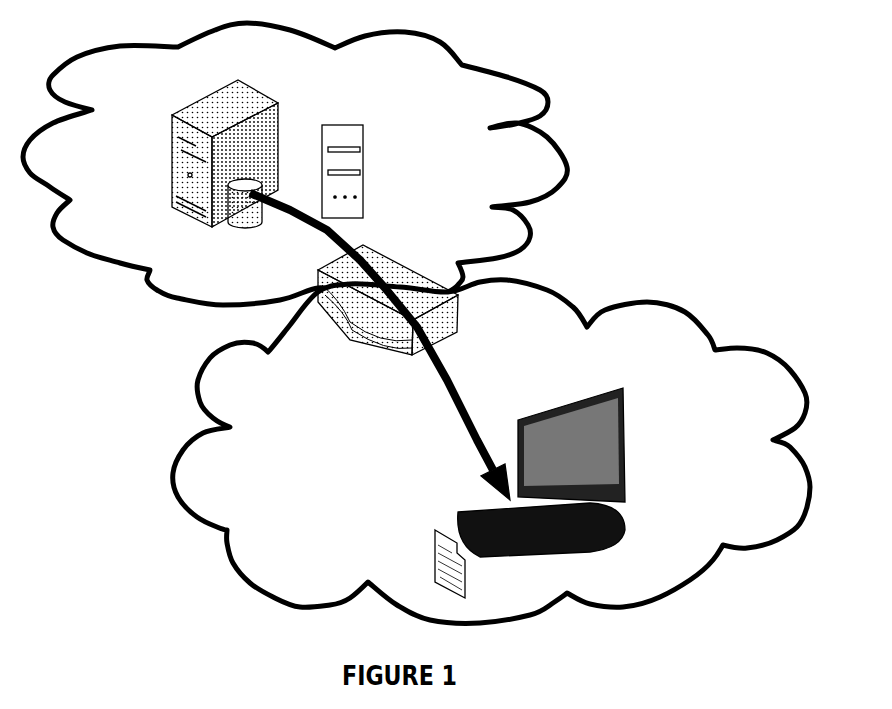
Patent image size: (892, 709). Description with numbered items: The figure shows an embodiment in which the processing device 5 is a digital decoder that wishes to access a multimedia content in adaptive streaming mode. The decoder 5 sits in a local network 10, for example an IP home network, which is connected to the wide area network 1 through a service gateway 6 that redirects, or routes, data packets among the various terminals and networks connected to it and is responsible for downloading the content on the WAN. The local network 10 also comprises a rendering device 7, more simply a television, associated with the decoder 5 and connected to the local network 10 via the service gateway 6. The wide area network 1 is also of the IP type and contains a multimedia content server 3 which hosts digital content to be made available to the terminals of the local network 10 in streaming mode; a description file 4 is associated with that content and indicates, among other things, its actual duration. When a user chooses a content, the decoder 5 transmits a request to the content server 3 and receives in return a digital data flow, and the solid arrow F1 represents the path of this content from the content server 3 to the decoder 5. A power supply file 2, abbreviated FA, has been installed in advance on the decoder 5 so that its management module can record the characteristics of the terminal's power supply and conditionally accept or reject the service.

The wide area network 1 is at (477, 58).
The local network 10 is at (788, 357).
The content server 3 is at (287, 110).
The description file 4 is at (305, 137).
The service gateway 6 is at (447, 290).
The solid arrow F1 is at (470, 407).
The rendering device 7 is at (628, 452).
The processing device 5 is at (460, 500).
The power supply file 2 is at (432, 533).